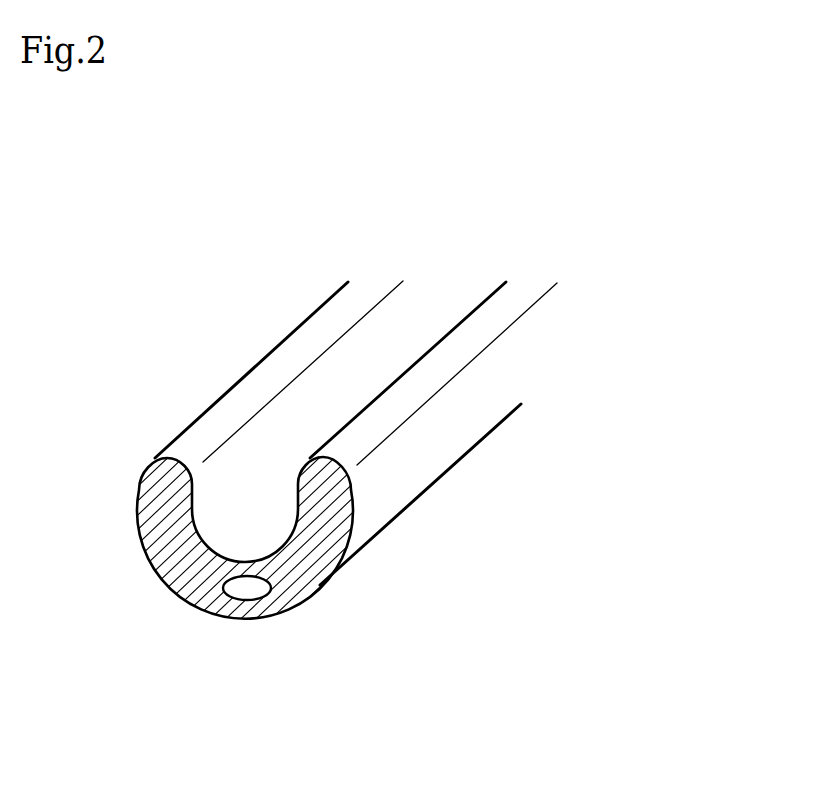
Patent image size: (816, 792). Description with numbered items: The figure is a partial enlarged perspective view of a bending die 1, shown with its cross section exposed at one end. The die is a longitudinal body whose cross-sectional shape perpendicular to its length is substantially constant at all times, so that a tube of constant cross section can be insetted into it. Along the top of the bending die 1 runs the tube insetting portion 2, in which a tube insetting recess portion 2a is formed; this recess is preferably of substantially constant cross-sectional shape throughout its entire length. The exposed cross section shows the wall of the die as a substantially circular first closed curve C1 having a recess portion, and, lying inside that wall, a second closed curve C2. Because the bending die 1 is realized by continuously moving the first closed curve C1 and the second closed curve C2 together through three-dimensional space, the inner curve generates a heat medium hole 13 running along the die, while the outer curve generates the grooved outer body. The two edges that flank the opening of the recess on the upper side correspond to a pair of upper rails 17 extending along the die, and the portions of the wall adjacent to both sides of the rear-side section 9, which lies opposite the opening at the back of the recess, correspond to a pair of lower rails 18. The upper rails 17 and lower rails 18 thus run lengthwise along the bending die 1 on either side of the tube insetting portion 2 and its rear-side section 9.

The bending die 1 is at (470, 507).
The tube insetting portion 2 is at (315, 388).
The tube insetting recess portion 2a is at (243, 488).
The rear-side section 9 is at (250, 617).
The heat medium hole 13 is at (255, 587).
The upper rails 17 is at (193, 443).
The lower rails 18 is at (162, 578).
The first closed curve C1 is at (138, 540).
The second closed curve C2 is at (210, 608).